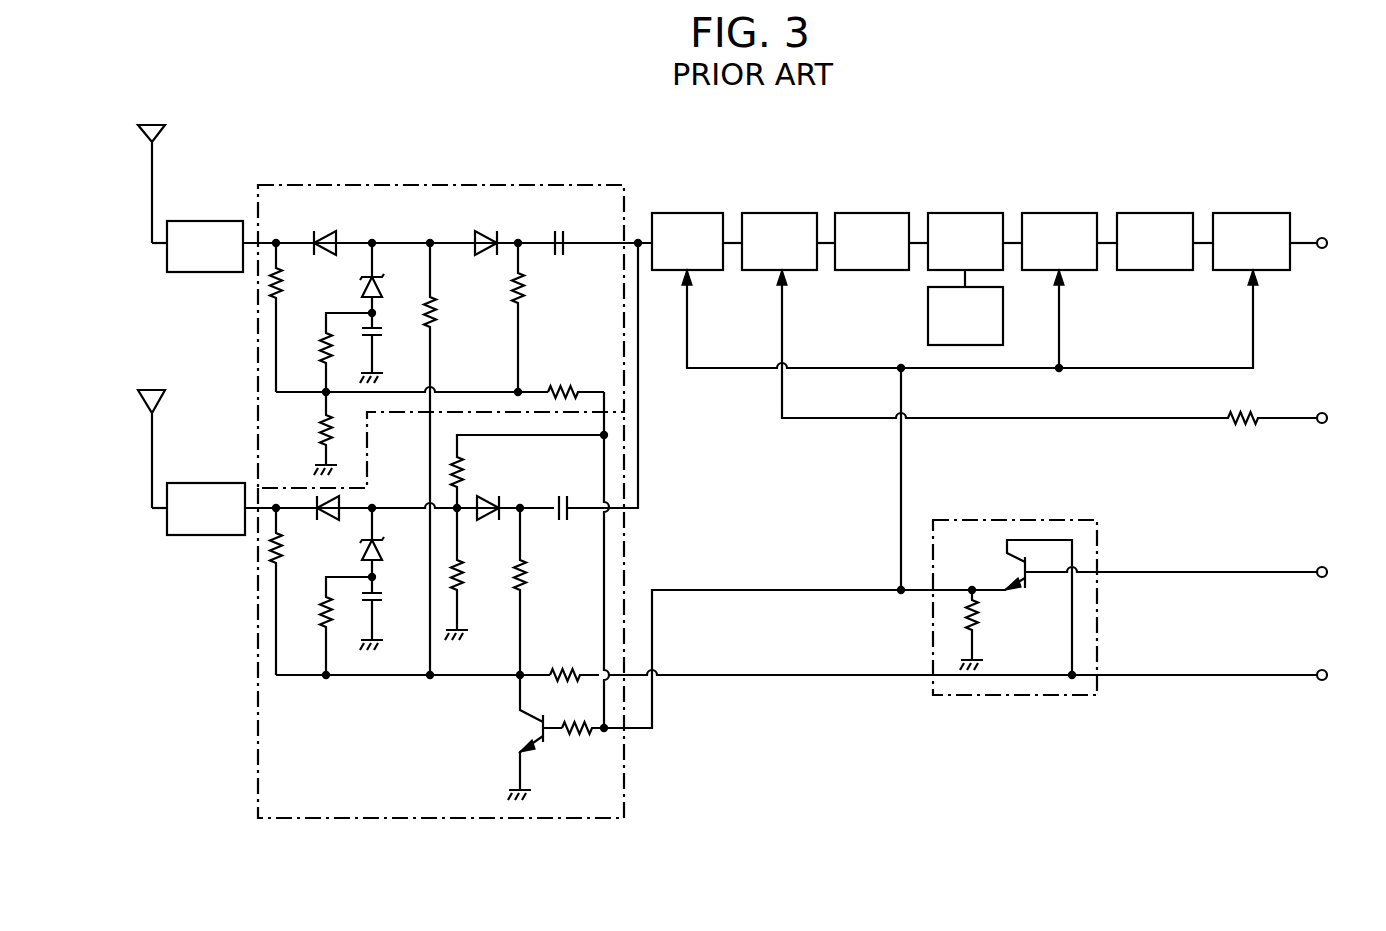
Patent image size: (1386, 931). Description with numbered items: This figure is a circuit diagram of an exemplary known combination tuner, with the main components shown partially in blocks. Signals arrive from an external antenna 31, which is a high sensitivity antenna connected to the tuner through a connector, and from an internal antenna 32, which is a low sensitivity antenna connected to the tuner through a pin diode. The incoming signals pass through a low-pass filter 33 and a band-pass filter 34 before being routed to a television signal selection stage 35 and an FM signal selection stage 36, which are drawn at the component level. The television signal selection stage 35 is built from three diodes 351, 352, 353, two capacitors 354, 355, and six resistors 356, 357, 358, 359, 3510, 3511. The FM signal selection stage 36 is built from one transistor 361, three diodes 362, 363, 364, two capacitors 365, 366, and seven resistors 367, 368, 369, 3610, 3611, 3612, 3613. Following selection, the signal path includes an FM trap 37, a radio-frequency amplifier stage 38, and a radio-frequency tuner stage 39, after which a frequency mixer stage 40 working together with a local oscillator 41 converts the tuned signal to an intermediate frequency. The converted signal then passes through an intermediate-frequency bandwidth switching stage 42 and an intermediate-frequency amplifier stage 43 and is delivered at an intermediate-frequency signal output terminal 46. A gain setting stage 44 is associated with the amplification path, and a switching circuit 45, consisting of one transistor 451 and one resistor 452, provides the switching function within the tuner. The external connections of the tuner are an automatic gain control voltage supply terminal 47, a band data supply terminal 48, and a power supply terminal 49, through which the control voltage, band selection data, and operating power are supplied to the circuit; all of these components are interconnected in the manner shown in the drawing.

The external antenna 31 is at (165, 130).
The internal antenna 32 is at (165, 395).
The low-pass filter 33 is at (223, 221).
The band-pass filter 34 is at (223, 483).
The television signal selection stage 35 is at (383, 185).
The diode 351 is at (327, 215).
The diode 352 is at (477, 237).
The diode 353 is at (396, 294).
The capacitor 354 is at (564, 238).
The capacitor 355 is at (384, 335).
The resistor 356 is at (282, 283).
The resistor 357 is at (320, 345).
The resistor 358 is at (320, 425).
The resistor 359 is at (436, 313).
The resistor 3510 is at (524, 290).
The resistor 3511 is at (563, 389).
The FM signal selection stage 36 is at (625, 790).
The transistor 361 is at (533, 728).
The diode 362 is at (327, 520).
The diode 363 is at (487, 520).
The diode 364 is at (396, 560).
The capacitor 365 is at (563, 496).
The capacitor 366 is at (384, 603).
The resistor 367 is at (282, 548).
The resistor 368 is at (320, 612).
The resistor 369 is at (463, 470).
The resistor 3610 is at (463, 580).
The resistor 3611 is at (526, 575).
The resistor 3612 is at (563, 668).
The resistor 3613 is at (578, 738).
The FM trap 37 is at (702, 213).
The radio-frequency amplifier stage 38 is at (797, 213).
The radio-frequency tuner stage 39 is at (884, 213).
The frequency mixer stage 40 is at (980, 213).
The local oscillator 41 is at (928, 320).
The intermediate-frequency bandwidth switching stage 42 is at (1080, 208).
The intermediate-frequency amplifier stage 43 is at (1170, 208).
The gain setting stage 44 is at (1265, 208).
The switching circuit 45 is at (1097, 540).
The transistor 451 is at (1008, 572).
The resistor 452 is at (978, 618).
The intermediate-frequency signal output terminal 46 is at (1324, 238).
The automatic gain control voltage supply terminal 47 is at (1324, 413).
The band data supply terminal 48 is at (1324, 567).
The power supply terminal 49 is at (1324, 670).